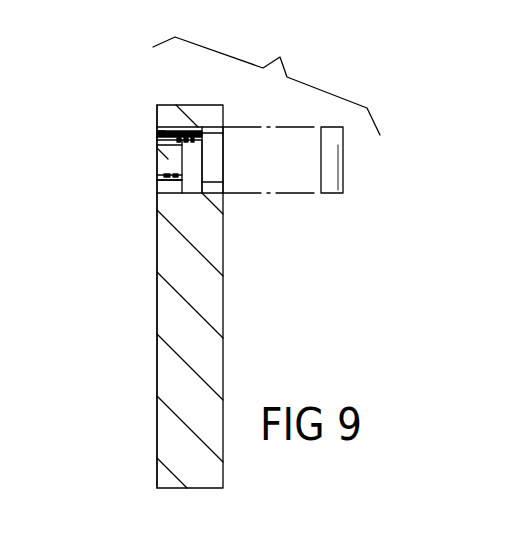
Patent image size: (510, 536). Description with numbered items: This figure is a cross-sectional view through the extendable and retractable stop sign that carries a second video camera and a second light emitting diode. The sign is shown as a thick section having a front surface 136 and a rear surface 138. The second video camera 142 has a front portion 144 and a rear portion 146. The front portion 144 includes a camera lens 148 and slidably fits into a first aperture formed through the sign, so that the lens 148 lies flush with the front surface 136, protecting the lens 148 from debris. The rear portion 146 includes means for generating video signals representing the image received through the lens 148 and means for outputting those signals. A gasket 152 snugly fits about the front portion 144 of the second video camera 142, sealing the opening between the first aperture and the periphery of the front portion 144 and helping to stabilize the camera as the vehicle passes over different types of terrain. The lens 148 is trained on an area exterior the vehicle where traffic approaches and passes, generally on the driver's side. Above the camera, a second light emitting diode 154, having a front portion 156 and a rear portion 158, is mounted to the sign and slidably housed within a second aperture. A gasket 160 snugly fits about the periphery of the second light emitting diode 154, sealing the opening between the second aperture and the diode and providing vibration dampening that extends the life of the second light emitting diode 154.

The front surface 136 is at (157, 311).
The rear surface 138 is at (223, 297).
The second video camera 142 is at (158, 163).
The front portion 144 is at (157, 180).
The rear portion 146 is at (195, 178).
The camera lens 148 is at (157, 176).
The gasket 152 is at (157, 189).
The second light emitting diode 154 is at (150, 126).
The front portion 156 is at (157, 140).
The rear portion 158 is at (223, 133).
The gasket 160 is at (154, 130).